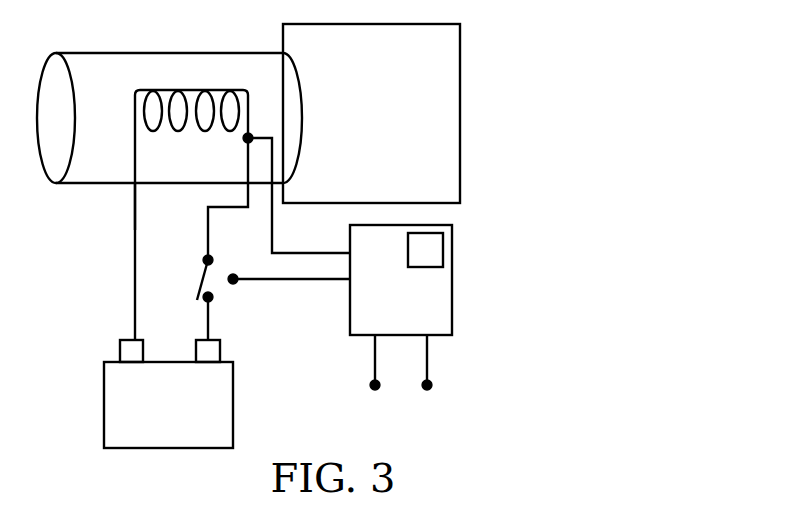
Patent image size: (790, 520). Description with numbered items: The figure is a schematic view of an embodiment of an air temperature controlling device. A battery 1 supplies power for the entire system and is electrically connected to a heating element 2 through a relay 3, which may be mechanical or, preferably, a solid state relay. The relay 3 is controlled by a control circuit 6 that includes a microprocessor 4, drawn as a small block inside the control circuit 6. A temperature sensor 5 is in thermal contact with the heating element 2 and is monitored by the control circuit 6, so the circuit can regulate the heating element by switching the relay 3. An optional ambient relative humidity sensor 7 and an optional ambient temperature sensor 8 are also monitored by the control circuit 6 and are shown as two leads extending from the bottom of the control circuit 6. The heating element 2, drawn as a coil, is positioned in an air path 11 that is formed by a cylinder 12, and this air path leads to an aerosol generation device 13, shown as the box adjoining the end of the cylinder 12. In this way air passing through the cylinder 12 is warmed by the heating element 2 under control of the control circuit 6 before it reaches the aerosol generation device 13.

The battery 1 is at (168, 394).
The heating element 2 is at (110, 97).
The relay 3 is at (273, 297).
The microprocessor 4 is at (425, 250).
The temperature sensor 5 is at (296, 176).
The control circuit 6 is at (401, 280).
The ambient relative humidity sensor 7 is at (375, 383).
The ambient temperature sensor 8 is at (427, 383).
The air path 11 is at (191, 160).
The cylinder 12 is at (153, 53).
The aerosol generation device 13 is at (437, 24).